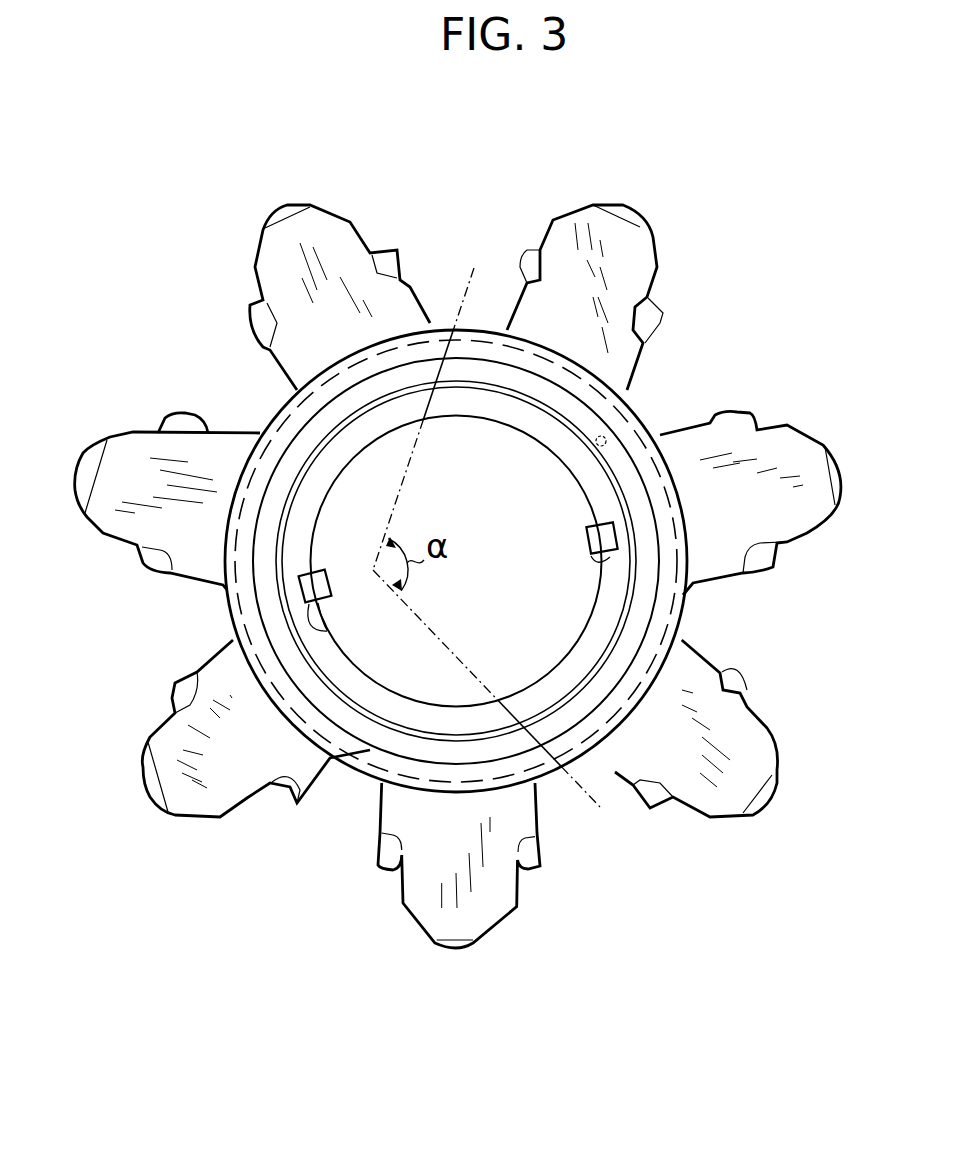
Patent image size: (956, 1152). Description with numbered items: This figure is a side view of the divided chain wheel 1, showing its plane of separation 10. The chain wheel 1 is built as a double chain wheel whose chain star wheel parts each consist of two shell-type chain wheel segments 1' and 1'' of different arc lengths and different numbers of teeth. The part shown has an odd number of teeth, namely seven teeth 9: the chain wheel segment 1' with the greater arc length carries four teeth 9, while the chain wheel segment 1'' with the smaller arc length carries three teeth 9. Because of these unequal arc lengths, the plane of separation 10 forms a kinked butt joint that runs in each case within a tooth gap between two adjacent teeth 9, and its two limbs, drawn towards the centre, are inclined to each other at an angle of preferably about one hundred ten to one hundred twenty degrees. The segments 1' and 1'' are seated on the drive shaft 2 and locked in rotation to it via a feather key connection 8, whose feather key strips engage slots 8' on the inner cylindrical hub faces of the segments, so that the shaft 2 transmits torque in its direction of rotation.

The chain wheel 1 is at (502, 540).
The chain wheel segment 1' is at (397, 561).
The chain wheel segment 1'' is at (484, 561).
The drive shaft 2 is at (363, 537).
The feather key connection 8 is at (458, 571).
The feather key slots 8' is at (459, 610).
The teeth 9 is at (277, 270).
The plane of separation 10 is at (410, 476).